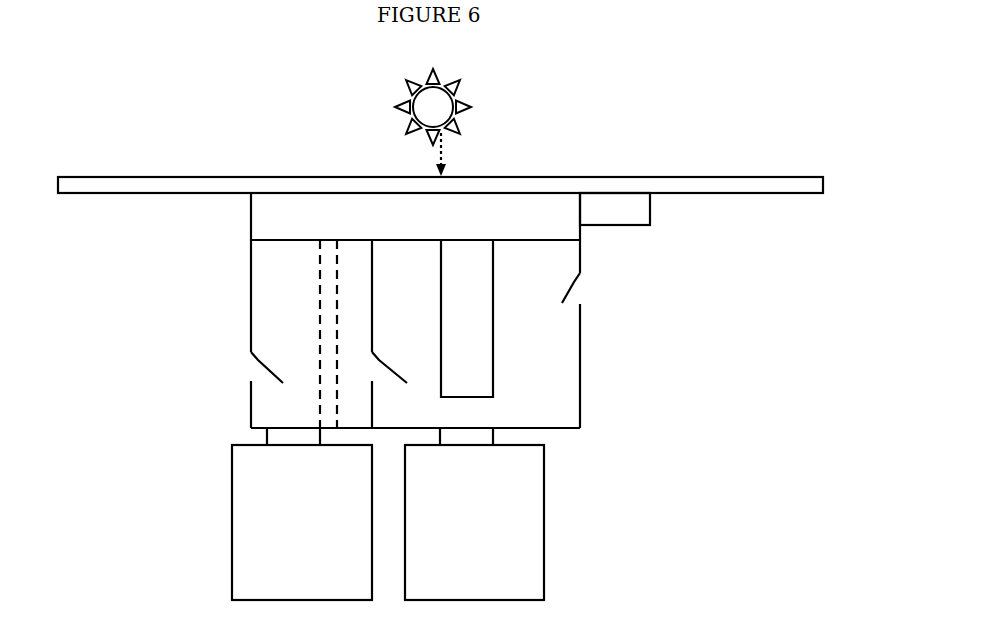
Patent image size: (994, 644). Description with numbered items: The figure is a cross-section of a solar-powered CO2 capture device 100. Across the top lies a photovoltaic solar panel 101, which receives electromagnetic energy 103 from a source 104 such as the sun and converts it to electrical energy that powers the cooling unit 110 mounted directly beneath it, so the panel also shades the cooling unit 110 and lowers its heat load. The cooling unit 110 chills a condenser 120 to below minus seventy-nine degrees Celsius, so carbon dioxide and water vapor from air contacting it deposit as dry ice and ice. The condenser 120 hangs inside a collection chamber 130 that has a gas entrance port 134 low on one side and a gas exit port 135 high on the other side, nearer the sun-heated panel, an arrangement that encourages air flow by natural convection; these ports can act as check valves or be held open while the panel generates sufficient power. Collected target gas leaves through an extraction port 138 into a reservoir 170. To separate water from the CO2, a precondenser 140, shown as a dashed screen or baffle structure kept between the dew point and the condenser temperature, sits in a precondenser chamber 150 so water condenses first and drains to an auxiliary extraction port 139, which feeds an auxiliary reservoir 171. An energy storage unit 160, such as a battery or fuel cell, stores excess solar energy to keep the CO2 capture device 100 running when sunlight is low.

The CO2 capture device 100 is at (683, 127).
The photovoltaic solar panel 101 is at (546, 174).
The electromagnetic energy 103 is at (448, 153).
The source 104 is at (390, 95).
The cooling unit 110 is at (389, 223).
The condenser 120 is at (496, 323).
The collection chamber 130 is at (548, 365).
The gas entrance port 134 is at (386, 367).
The gas exit port 135 is at (577, 287).
The extraction port 138 is at (496, 438).
The auxiliary extraction port 139 is at (266, 438).
The precondenser 140 is at (318, 320).
The precondenser chamber 150 is at (268, 273).
The energy storage unit 160 is at (618, 211).
The reservoir 170 is at (546, 522).
The auxiliary reservoir 171 is at (231, 523).